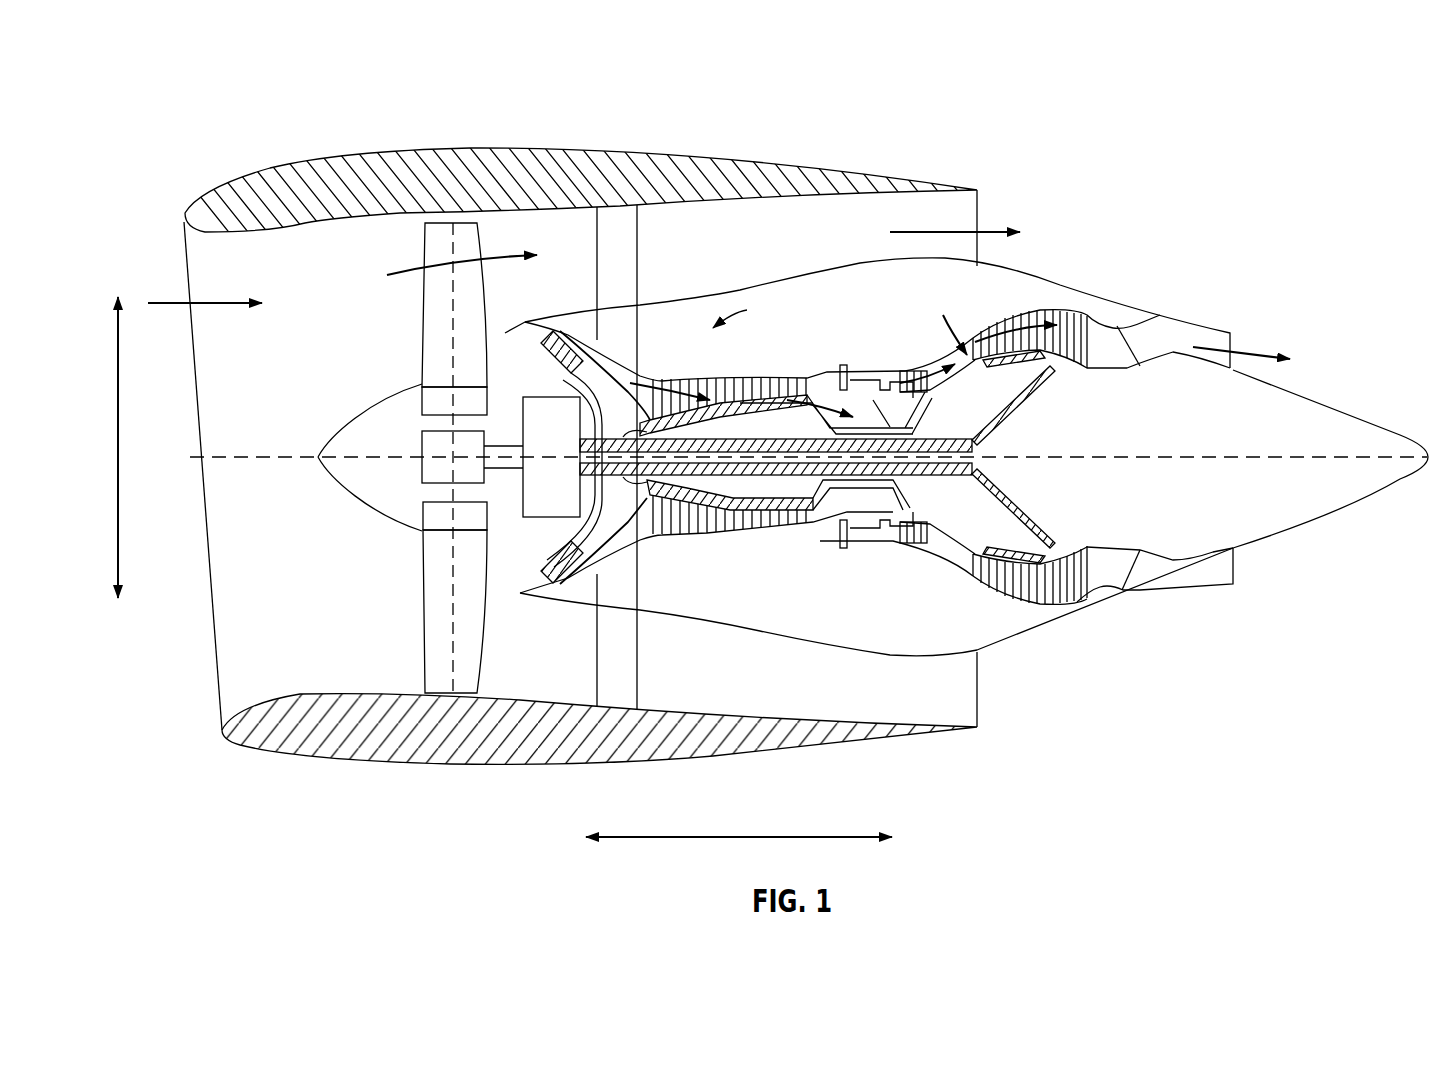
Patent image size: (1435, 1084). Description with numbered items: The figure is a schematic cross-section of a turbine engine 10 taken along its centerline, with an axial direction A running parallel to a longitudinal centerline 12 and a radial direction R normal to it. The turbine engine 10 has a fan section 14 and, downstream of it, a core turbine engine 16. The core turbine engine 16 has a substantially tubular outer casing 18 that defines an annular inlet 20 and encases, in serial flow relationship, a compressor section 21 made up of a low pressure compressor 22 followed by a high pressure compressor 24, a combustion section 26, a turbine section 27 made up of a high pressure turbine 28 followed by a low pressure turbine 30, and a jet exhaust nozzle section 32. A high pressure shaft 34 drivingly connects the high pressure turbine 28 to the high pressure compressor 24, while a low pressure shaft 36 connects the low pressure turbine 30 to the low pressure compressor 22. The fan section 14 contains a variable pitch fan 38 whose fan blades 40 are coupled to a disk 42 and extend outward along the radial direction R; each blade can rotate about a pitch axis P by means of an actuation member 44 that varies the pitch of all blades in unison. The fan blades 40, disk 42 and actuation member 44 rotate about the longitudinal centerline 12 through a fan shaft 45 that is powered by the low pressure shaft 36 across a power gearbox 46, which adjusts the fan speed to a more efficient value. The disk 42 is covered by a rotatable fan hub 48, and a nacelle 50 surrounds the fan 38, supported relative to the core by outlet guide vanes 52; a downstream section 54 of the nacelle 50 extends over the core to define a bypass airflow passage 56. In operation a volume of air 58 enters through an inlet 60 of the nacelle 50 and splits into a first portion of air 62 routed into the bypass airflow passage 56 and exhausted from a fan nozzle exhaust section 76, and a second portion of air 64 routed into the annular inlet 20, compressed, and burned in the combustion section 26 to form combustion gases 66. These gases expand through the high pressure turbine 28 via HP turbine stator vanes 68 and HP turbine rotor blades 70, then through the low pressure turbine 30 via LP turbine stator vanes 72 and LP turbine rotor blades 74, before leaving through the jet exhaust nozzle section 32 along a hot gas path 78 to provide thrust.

The turbine engine 10 is at (1258, 116).
The longitudinal centerline 12 is at (1188, 455).
The fan section 14 is at (372, 250).
The core turbine engine 16 is at (855, 296).
The outer casing 18 is at (765, 633).
The annular inlet 20 is at (537, 577).
The compressor section 21 is at (747, 318).
The low pressure compressor 22 is at (586, 570).
The high pressure compressor 24 is at (683, 518).
The combustion section 26 is at (863, 533).
The turbine section 27 is at (988, 313).
The high pressure turbine 28 is at (933, 538).
The low pressure turbine 30 is at (1072, 598).
The jet exhaust nozzle section 32 is at (1135, 586).
The high pressure shaft 34 is at (853, 397).
The low pressure shaft 36 is at (958, 437).
The fan 38 is at (360, 507).
The fan blades 40 is at (420, 590).
The disk 42 is at (437, 400).
The actuation member 44 is at (403, 430).
The fan shaft 45 is at (489, 446).
The power gearbox 46 is at (542, 417).
The rotatable fan hub 48 is at (340, 473).
The nacelle 50 is at (415, 768).
The outlet guide vanes 52 is at (638, 240).
The downstream section of the nacelle 54 is at (883, 173).
The bypass airflow passage 56 is at (777, 235).
The volume of air 58 is at (232, 300).
The inlet 60 is at (213, 627).
The first portion of air 62 is at (400, 279).
The second portion of air 64 is at (505, 333).
The combustion gases 66 is at (915, 368).
The HP turbine stator vanes 68 is at (877, 535).
The HP turbine rotor blades 70 is at (910, 525).
The LP turbine stator vanes 72 is at (983, 587).
The LP turbine rotor blades 74 is at (997, 590).
The fan nozzle exhaust section 76 is at (967, 212).
The hot gas path 78 is at (950, 321).
The pitch axis P is at (453, 250).
The radial direction R is at (118, 450).
The axial direction A is at (740, 835).